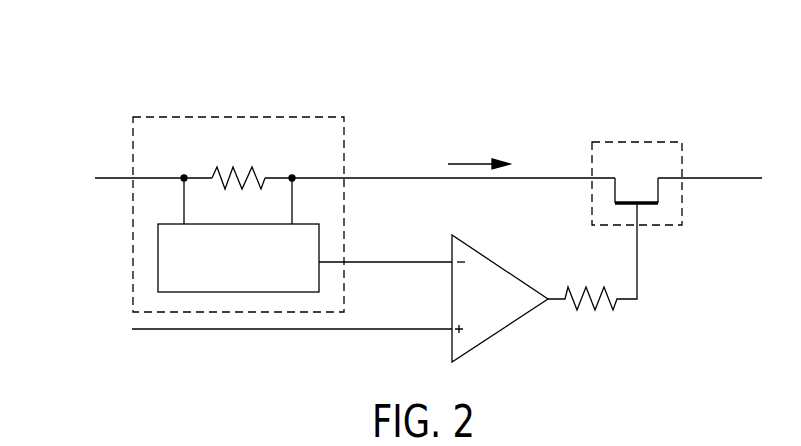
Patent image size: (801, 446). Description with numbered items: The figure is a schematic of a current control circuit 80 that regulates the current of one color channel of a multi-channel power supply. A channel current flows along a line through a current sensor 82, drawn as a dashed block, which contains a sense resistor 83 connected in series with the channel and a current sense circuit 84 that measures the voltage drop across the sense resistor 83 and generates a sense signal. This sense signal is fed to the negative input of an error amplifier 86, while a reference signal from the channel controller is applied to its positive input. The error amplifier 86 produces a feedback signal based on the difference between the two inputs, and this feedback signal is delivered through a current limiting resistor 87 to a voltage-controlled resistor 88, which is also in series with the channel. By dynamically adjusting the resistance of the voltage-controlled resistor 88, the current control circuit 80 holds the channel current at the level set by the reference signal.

The current control circuit 80 is at (738, 122).
The current sensor 82 is at (150, 115).
The sense resistor 83 is at (212, 176).
The current sense circuit 84 is at (158, 257).
The error amplifier 86 is at (500, 330).
The current limiting resistor 87 is at (600, 308).
The voltage-controlled resistor 88 is at (657, 140).